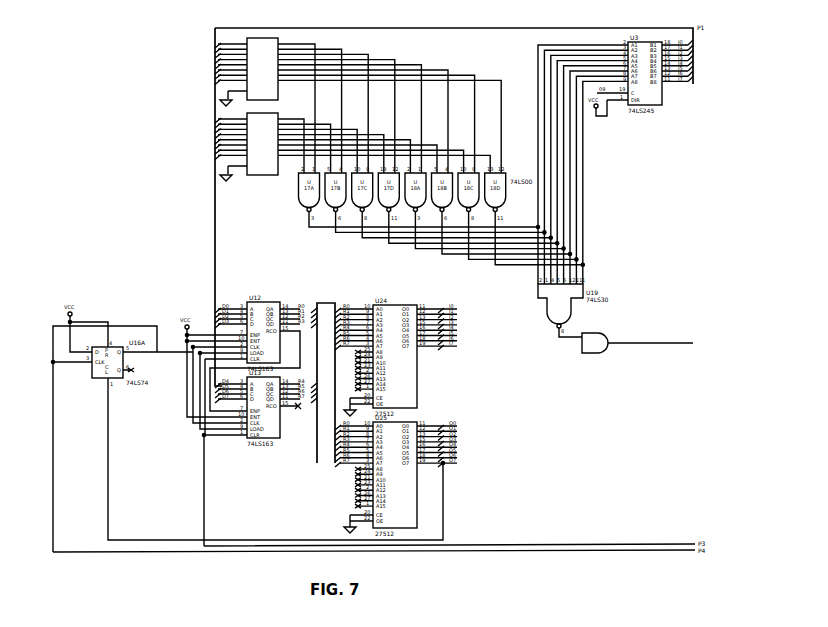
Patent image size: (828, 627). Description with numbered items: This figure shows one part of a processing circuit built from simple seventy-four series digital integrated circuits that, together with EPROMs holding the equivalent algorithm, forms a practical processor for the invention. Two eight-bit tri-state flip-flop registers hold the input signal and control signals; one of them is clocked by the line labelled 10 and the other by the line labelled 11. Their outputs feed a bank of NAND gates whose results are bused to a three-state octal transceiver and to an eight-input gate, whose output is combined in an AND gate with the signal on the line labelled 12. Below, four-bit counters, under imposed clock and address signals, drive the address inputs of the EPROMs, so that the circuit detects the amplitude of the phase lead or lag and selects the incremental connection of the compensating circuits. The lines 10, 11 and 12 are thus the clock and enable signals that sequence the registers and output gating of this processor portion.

The first latch clock signal line (U1 74LS374) 10 is at (247, 97).
The second latch clock signal line (U2 74LS374) 11 is at (247, 172).
The AND gate enable input signal line (U20A 74LS08) 12 is at (582, 349).